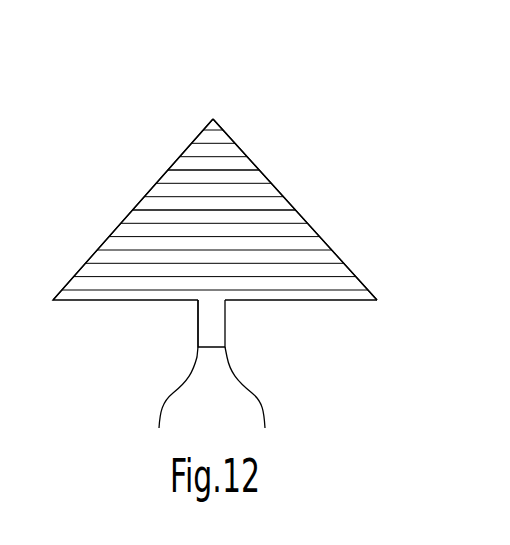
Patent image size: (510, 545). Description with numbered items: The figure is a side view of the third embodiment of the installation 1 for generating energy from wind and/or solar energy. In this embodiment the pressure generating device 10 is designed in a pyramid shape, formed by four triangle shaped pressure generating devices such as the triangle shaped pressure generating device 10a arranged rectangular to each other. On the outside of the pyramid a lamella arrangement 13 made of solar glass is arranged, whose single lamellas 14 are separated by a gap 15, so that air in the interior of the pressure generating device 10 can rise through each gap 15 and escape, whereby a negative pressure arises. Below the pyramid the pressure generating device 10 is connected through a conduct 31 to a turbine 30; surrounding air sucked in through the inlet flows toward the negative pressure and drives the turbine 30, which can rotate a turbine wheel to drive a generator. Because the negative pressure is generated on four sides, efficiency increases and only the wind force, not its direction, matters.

The installation 1 is at (252, 357).
The pressure generating device 10 is at (320, 202).
The triangle shaped pressure generating device 10a is at (250, 192).
The lamella arrangement 13 is at (177, 170).
The lamella 14 is at (227, 163).
The gap 15 is at (272, 208).
The turbine 30 is at (208, 328).
The conduct 31 is at (197, 304).